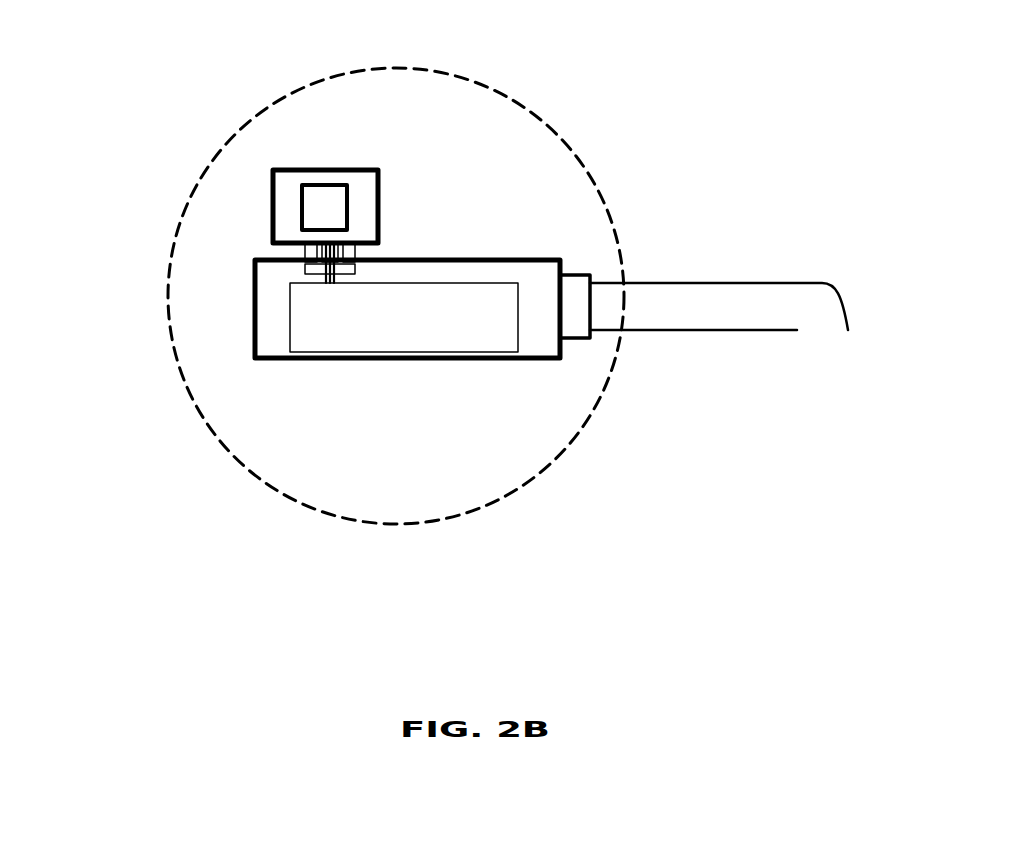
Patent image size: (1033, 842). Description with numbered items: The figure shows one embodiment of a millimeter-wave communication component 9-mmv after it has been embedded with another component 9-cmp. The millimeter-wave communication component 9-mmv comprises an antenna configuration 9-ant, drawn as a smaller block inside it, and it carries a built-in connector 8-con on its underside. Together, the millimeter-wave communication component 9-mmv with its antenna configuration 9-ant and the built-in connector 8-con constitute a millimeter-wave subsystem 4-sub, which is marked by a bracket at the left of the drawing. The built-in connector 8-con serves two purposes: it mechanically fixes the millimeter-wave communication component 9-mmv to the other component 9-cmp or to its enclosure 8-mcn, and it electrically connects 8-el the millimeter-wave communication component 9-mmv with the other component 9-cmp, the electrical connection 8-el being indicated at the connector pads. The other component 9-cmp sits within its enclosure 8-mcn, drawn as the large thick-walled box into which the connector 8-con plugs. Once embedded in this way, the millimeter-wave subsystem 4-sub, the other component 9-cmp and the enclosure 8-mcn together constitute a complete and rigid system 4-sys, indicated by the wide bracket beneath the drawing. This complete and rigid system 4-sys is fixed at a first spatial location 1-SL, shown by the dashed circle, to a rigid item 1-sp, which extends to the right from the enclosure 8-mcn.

The first spatial location 1-SL is at (522, 487).
The rigid item 1-sp is at (748, 283).
The millimeter-wave subsystem 4-sub is at (138, 165).
The complete and rigid system 4-sys is at (620, 603).
The enclosure 8-mcn is at (543, 357).
The built-in connector 8-con is at (355, 253).
The electrical connection 8-el is at (305, 258).
The millimeter-wave communication component 9-mmv is at (288, 170).
The antenna configuration 9-ant is at (322, 185).
The other component 9-cmp is at (445, 327).